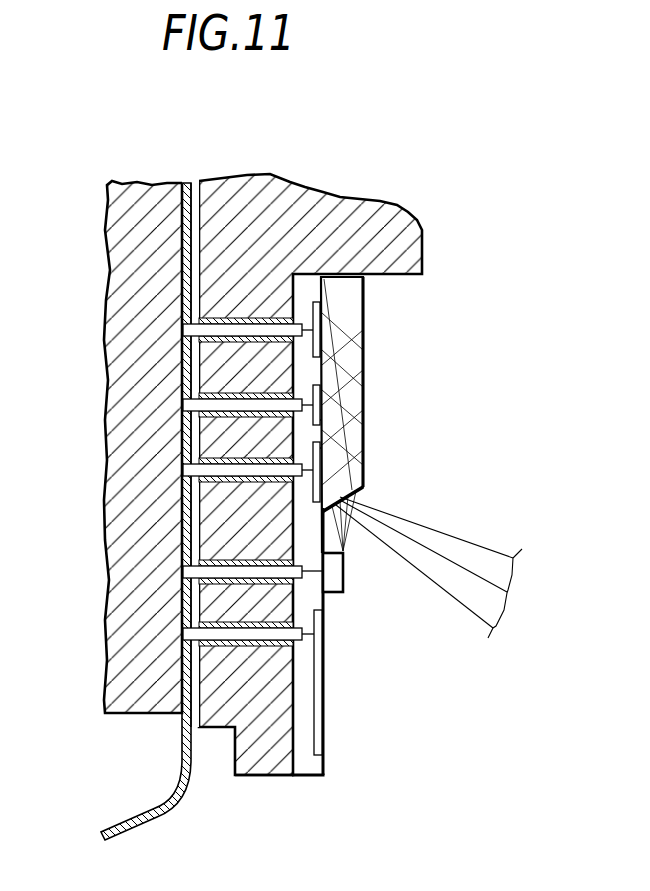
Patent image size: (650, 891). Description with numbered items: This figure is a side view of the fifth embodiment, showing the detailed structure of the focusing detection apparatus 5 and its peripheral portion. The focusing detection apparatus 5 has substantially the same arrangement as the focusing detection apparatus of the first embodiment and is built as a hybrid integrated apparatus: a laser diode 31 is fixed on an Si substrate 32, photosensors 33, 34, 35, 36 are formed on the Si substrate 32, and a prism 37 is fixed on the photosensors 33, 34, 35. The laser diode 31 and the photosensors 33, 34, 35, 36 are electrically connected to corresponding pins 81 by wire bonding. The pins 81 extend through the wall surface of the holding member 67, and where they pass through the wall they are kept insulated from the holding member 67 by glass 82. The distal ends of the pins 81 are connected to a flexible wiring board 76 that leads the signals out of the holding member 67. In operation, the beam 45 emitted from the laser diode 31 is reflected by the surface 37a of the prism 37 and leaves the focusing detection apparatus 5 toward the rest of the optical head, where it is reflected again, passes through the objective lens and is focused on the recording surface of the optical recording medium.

The focusing detection apparatus 5 is at (363, 621).
The laser diode 31 is at (337, 575).
The Si substrate 32 is at (308, 768).
The photosensor 33 is at (318, 448).
The photosensor 34 is at (320, 420).
The photosensor 35 is at (318, 307).
The photosensor 36 is at (320, 688).
The prism 37 is at (358, 287).
The surface of the prism 37a is at (362, 493).
The beam 45 is at (468, 538).
The holding member 67 is at (413, 250).
The flexible wiring board 76 is at (187, 183).
The pins 81 is at (186, 332).
The glass 82 is at (183, 329).